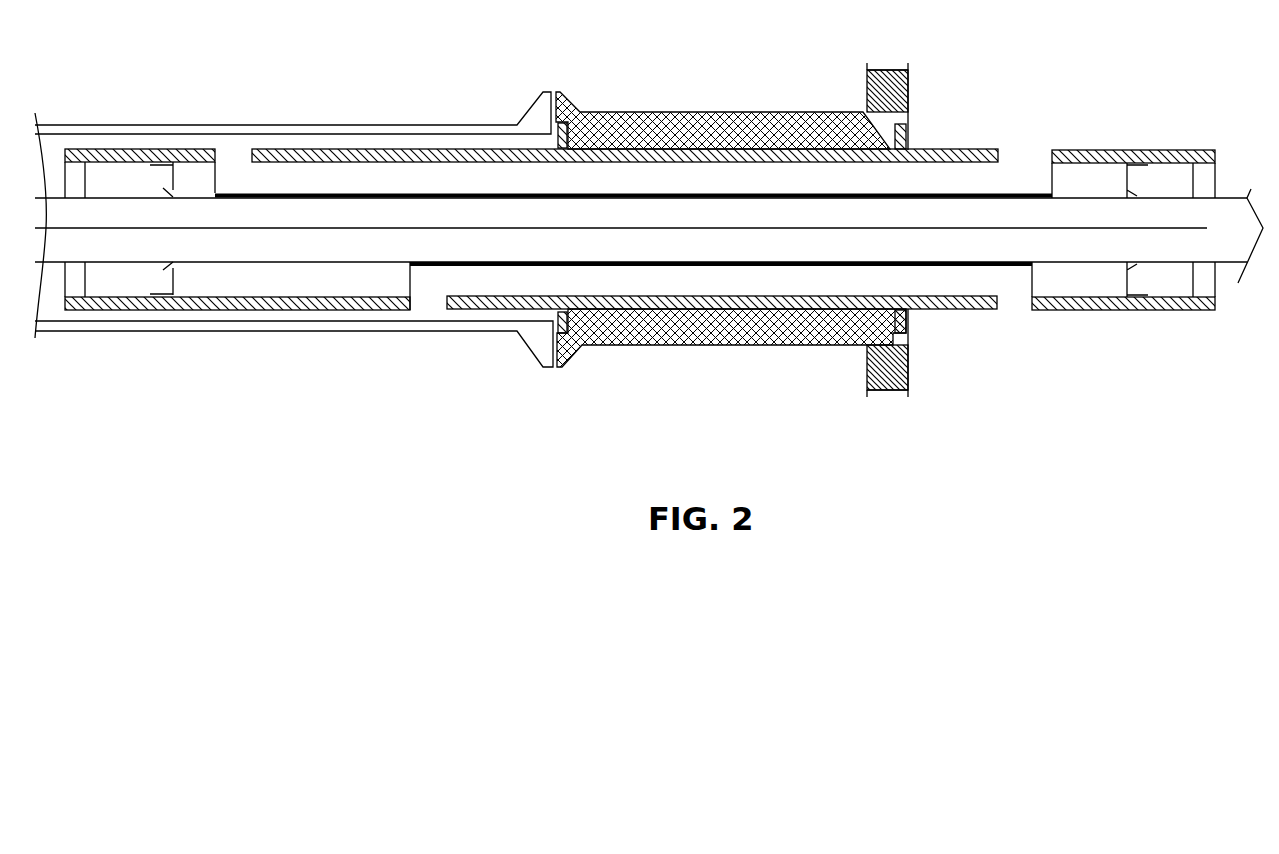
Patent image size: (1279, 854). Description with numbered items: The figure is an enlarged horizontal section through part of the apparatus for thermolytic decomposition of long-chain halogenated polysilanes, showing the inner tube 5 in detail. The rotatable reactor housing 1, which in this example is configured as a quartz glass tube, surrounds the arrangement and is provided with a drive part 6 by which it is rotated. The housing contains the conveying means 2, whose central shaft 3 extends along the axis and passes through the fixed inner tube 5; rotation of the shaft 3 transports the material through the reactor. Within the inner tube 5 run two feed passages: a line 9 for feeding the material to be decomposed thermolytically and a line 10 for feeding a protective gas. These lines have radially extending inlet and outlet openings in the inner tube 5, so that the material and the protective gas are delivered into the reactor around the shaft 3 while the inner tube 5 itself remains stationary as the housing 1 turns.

The reactor housing 1 is at (318, 124).
The conveying means 2 is at (403, 192).
The shaft 3 is at (348, 253).
The inner tube 5 is at (953, 302).
The drive part 6 is at (868, 100).
The line for feeding the material to be decomposed 9 is at (597, 167).
The line for feeding a protective gas 10 is at (610, 282).